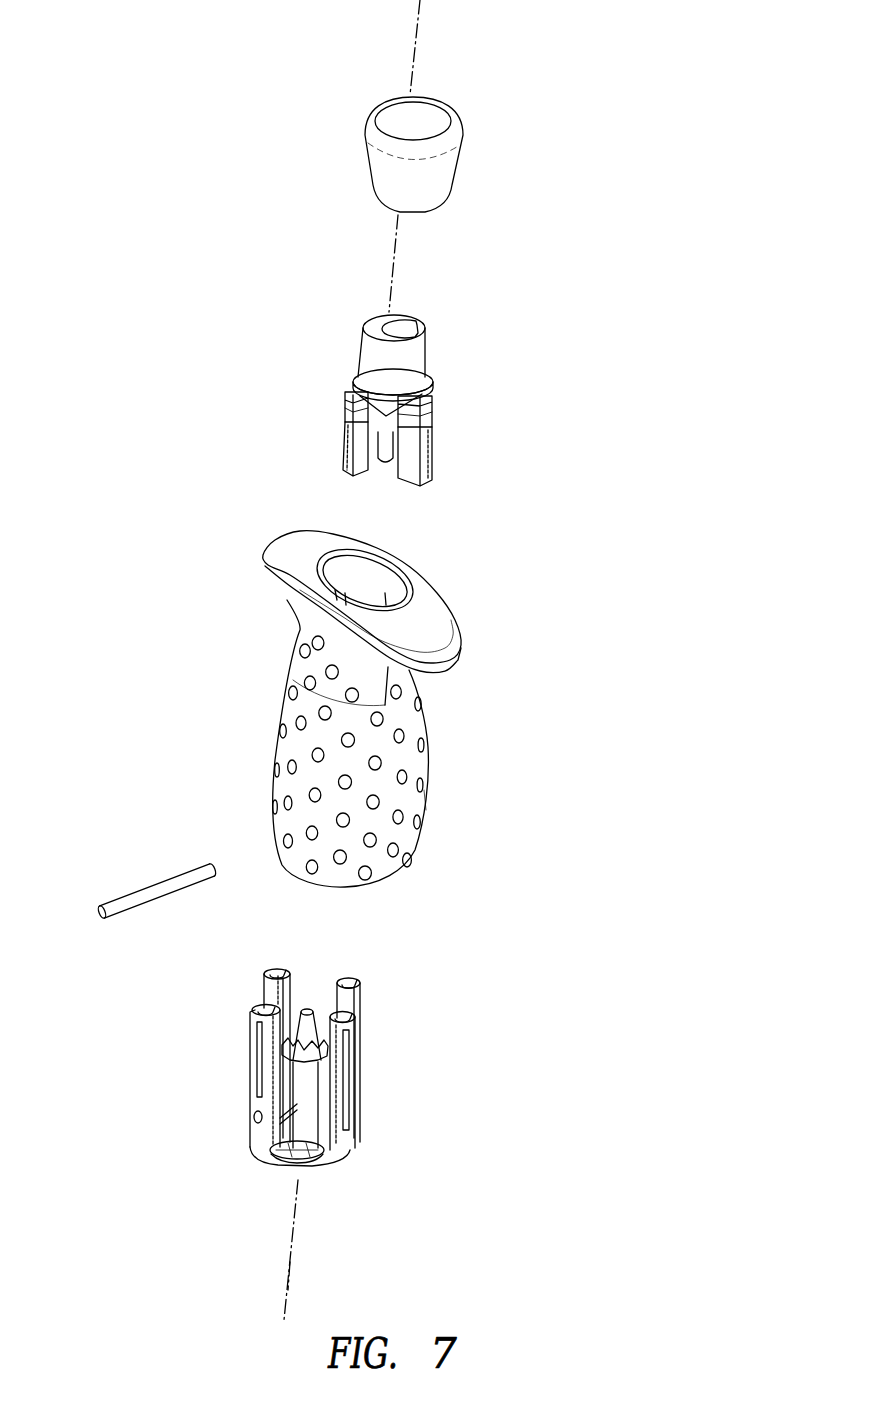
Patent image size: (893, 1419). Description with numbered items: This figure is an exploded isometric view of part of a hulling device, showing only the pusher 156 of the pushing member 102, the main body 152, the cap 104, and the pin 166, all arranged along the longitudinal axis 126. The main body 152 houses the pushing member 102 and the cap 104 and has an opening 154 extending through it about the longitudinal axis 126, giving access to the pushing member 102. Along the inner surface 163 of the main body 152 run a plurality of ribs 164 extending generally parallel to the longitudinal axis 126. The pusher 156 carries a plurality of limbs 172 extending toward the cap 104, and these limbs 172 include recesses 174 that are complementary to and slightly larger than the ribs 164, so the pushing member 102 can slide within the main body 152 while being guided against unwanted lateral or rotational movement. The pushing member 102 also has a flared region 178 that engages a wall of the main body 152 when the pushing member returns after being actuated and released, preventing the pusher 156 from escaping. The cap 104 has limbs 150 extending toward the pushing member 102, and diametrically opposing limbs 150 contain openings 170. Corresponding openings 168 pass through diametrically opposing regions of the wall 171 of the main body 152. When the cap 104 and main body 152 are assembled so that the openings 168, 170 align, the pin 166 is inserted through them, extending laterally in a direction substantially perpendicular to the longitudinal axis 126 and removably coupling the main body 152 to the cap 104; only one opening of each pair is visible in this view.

The pushing member 102 is at (222, 123).
The cap 104 is at (335, 1168).
The longitudinal axis 126 is at (285, 1280).
The limbs 150 is at (265, 1005).
The main body 152 is at (430, 768).
The opening 154 is at (402, 562).
The pusher 156 is at (430, 357).
The inner surface 163 is at (396, 578).
The ribs 164 is at (346, 592).
The pin 166 is at (152, 883).
The openings 168 is at (270, 841).
The openings 170 is at (250, 1116).
The wall 171 is at (427, 800).
The limbs 172 is at (360, 407).
The recesses 174 is at (345, 456).
The flared region 178 is at (356, 394).